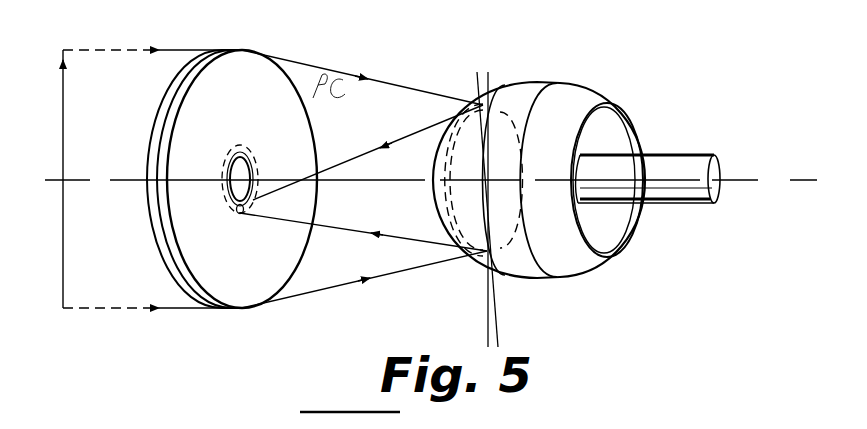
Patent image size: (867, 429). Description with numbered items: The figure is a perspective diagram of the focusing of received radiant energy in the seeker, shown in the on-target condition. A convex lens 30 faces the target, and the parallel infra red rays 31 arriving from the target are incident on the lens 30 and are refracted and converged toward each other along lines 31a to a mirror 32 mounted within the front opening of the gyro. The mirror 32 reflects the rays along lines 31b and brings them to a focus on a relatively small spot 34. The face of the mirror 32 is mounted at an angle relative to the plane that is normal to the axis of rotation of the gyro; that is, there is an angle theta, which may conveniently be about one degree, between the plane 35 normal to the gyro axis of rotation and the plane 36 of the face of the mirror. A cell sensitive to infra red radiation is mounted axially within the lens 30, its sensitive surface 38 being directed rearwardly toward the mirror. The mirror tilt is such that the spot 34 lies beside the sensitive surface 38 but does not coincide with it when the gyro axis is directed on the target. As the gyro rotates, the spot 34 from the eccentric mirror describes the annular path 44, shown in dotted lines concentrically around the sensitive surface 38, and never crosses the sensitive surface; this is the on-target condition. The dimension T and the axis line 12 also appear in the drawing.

The optical axis 12 is at (431, 180).
The lens 30 is at (150, 128).
The rays 31 is at (132, 48).
The lines 31a is at (308, 64).
The lines 31b is at (327, 170).
The mirror 32 is at (496, 100).
The spot 34 is at (238, 213).
The plane 35 is at (487, 316).
The plane 36 is at (494, 318).
The sensitive surface 38 is at (252, 163).
The annular path 44 is at (241, 145).
The disk diameter T is at (65, 85).